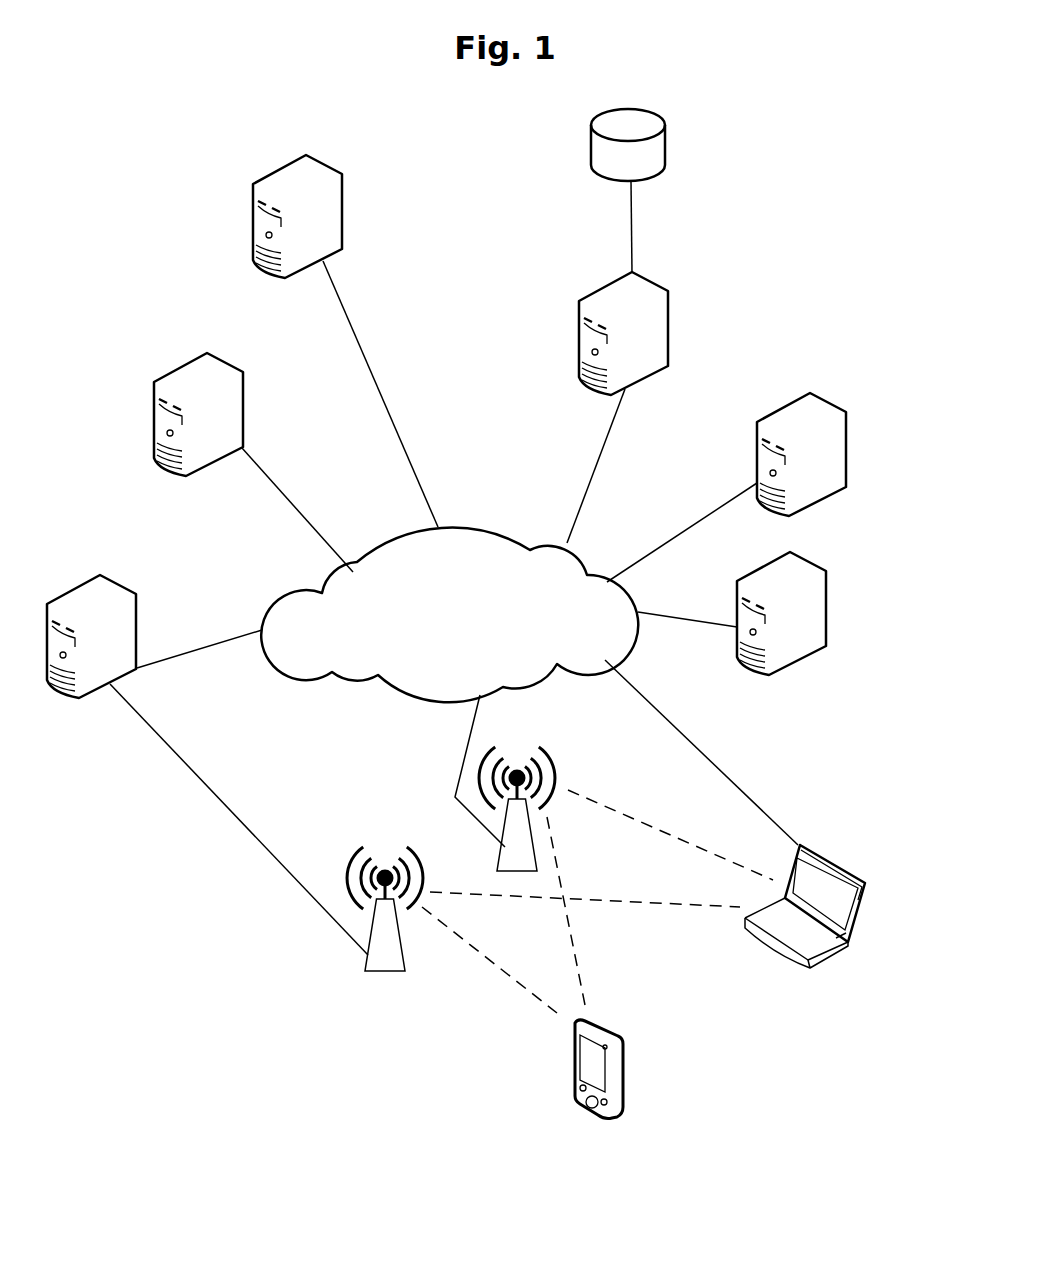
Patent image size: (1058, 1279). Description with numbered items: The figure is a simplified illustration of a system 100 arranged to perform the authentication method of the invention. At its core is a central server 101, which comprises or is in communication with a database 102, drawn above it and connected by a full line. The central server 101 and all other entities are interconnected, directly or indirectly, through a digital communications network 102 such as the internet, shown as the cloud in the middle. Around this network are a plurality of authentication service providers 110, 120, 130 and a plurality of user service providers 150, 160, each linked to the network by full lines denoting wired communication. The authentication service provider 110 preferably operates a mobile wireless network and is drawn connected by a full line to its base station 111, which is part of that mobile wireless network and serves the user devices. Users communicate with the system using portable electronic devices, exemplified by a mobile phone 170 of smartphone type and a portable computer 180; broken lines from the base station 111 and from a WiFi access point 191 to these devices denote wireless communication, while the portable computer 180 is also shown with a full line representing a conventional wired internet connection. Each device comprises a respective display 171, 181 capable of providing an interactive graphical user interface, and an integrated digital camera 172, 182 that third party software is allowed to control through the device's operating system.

The system 100 is at (725, 330).
The central server 101 is at (623, 333).
The database / digital communications network 102 is at (463, 405).
The authentication service provider 110 is at (91, 636).
The base station 111 is at (385, 909).
The authentication service provider 120 is at (198, 414).
The authentication service provider 130 is at (297, 216).
The user service provider 150 is at (781, 613).
The user service provider 160 is at (801, 454).
The mobile phone 170 is at (593, 1103).
The display 171 is at (580, 1060).
The digital camera 172 is at (607, 1047).
The portable computer 180 is at (831, 945).
The display 181 is at (865, 907).
The digital camera 182 is at (867, 884).
The WiFi access point 191 is at (517, 809).